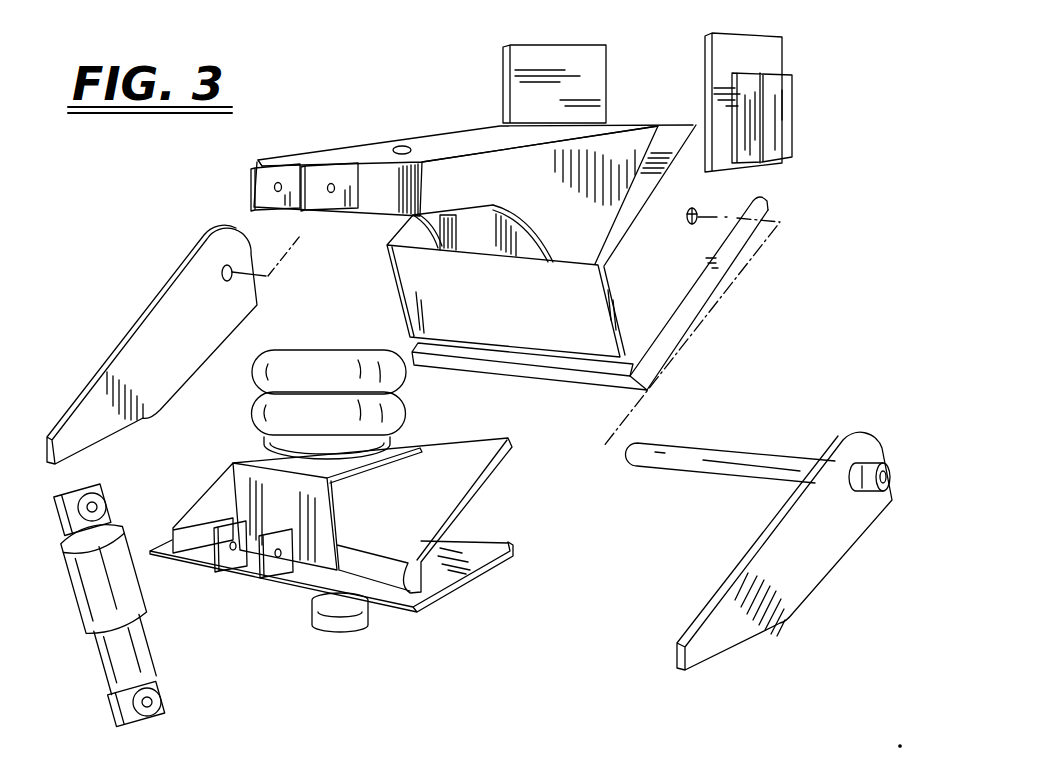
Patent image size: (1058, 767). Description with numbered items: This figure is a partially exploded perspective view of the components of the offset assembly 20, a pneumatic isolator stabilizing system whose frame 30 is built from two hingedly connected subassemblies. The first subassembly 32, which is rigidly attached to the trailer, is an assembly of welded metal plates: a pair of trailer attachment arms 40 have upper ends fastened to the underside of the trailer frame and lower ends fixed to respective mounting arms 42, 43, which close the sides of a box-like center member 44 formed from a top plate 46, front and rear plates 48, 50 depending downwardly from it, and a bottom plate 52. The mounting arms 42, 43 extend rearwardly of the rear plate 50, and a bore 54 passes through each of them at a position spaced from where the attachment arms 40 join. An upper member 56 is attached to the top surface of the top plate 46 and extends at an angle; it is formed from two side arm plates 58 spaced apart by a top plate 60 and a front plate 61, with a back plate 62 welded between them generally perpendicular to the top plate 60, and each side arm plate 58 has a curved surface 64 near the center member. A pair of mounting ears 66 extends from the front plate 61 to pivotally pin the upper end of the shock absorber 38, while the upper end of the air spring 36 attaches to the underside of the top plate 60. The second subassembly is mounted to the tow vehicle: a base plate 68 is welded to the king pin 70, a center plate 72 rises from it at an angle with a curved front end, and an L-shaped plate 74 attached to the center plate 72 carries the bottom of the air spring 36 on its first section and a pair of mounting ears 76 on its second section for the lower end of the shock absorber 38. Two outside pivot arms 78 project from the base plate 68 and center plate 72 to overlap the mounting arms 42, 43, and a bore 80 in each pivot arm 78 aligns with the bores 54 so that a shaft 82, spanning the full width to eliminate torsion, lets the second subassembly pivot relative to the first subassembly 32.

The offset assembly 20 is at (126, 266).
The frame 30 is at (432, 620).
The first subassembly 32 is at (706, 304).
The air spring 36 is at (262, 403).
The shock absorber 38 is at (128, 592).
The trailer attachment arms 40 is at (560, 64).
The mounting arm 42 is at (398, 285).
The mounting arm 43 is at (769, 172).
The center member 44 is at (574, 332).
The top plate 46 is at (628, 200).
The front plate 48 is at (521, 356).
The rear plate 50 is at (622, 122).
The bottom plate 52 is at (670, 334).
The bore 54 is at (691, 225).
The upper member 56 is at (353, 140).
The side arm plates 58 is at (449, 253).
The top plate 60 is at (442, 150).
The front plate 61 is at (397, 186).
The back plate 62 is at (477, 242).
The curved surface 64 is at (518, 232).
The mounting ears 66 is at (262, 180).
The base plate 68 is at (473, 563).
The king pin 70 is at (313, 620).
The center plate 72 is at (468, 470).
The L-shaped plate 74 is at (300, 517).
The mounting ears 76 is at (278, 572).
The outside pivot arms 78 is at (150, 340).
The bore 80 is at (229, 281).
The shaft 82 is at (755, 462).